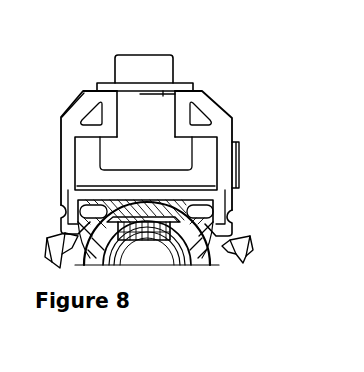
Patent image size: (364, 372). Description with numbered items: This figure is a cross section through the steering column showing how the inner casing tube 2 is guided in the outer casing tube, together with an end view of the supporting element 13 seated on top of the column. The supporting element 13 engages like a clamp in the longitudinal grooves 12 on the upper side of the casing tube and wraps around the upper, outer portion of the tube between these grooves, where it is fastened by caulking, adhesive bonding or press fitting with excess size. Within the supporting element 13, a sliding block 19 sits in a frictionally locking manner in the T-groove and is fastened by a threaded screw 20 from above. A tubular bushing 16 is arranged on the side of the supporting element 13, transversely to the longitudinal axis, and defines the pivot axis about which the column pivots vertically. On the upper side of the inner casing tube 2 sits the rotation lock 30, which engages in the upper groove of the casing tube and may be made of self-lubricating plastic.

The inner casing tube 2 is at (232, 239).
The longitudinal grooves 12 is at (61, 229).
The supporting element 13 is at (265, 186).
The tubular bushing 16 is at (238, 154).
The sliding block 19 is at (153, 124).
The threaded screw 20 is at (158, 68).
The rotation lock 30 is at (216, 210).